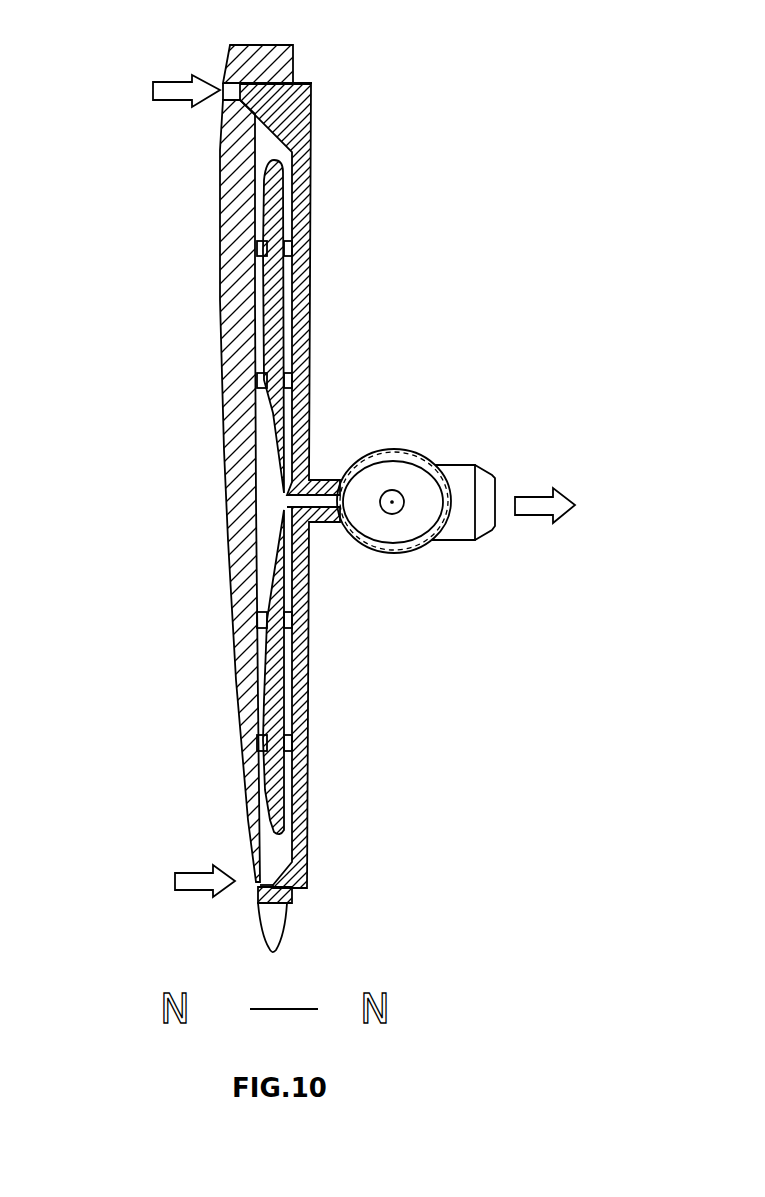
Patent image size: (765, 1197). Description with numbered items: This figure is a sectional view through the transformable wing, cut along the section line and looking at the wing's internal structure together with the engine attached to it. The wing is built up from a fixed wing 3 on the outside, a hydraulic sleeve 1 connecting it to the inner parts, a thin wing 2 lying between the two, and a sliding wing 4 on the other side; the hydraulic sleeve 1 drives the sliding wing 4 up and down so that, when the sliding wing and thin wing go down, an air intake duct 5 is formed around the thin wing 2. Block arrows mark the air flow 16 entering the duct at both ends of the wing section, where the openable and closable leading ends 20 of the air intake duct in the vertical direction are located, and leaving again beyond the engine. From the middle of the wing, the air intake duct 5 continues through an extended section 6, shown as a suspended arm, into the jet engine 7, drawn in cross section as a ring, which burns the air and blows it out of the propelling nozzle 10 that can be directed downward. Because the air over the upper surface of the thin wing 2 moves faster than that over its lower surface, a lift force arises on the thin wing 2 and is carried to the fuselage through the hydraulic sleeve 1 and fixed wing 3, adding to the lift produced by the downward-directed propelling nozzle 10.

The hydraulic sleeve 1 is at (257, 248).
The thin wing 2 is at (273, 283).
The fixed wing 3 is at (243, 500).
The sliding wing 4 is at (302, 218).
The air intake duct 5 is at (275, 153).
The extended section of the air intake duct 6 is at (329, 490).
The jet engine 7 is at (394, 450).
The propelling nozzle 10 is at (465, 502).
The air flow 16 is at (172, 92).
The openable/closable leading end of the air intake duct in vertical direction 20 is at (220, 92).